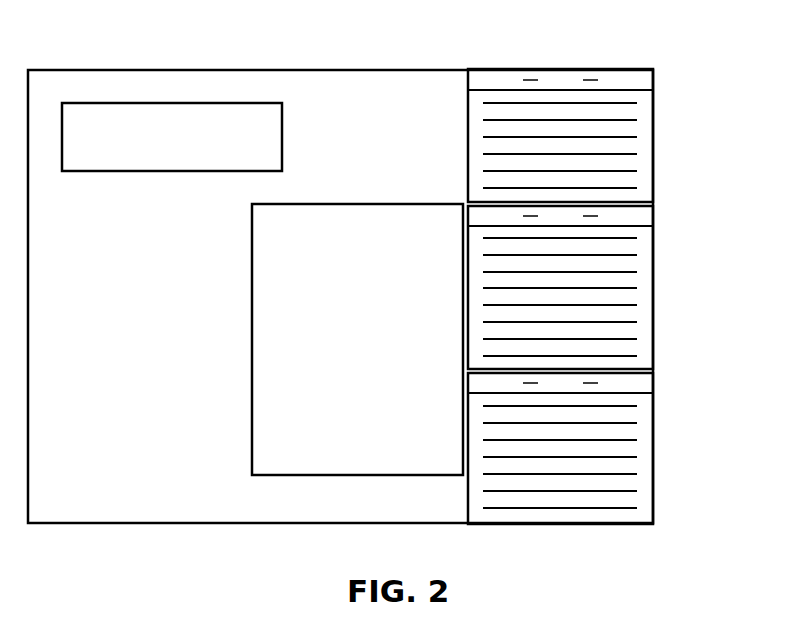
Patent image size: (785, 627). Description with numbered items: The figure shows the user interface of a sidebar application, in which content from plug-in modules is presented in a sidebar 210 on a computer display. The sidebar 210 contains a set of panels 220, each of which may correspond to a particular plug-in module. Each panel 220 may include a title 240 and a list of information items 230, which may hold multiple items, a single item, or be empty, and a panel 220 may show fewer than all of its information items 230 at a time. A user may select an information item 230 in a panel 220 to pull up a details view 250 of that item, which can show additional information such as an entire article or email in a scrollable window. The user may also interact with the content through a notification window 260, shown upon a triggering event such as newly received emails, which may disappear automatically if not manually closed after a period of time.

The sidebar 210 is at (587, 64).
The panel 220 is at (643, 255).
The information item 230 is at (643, 402).
The title 240 is at (645, 80).
The details view 250 is at (252, 258).
The notification window 260 is at (282, 134).